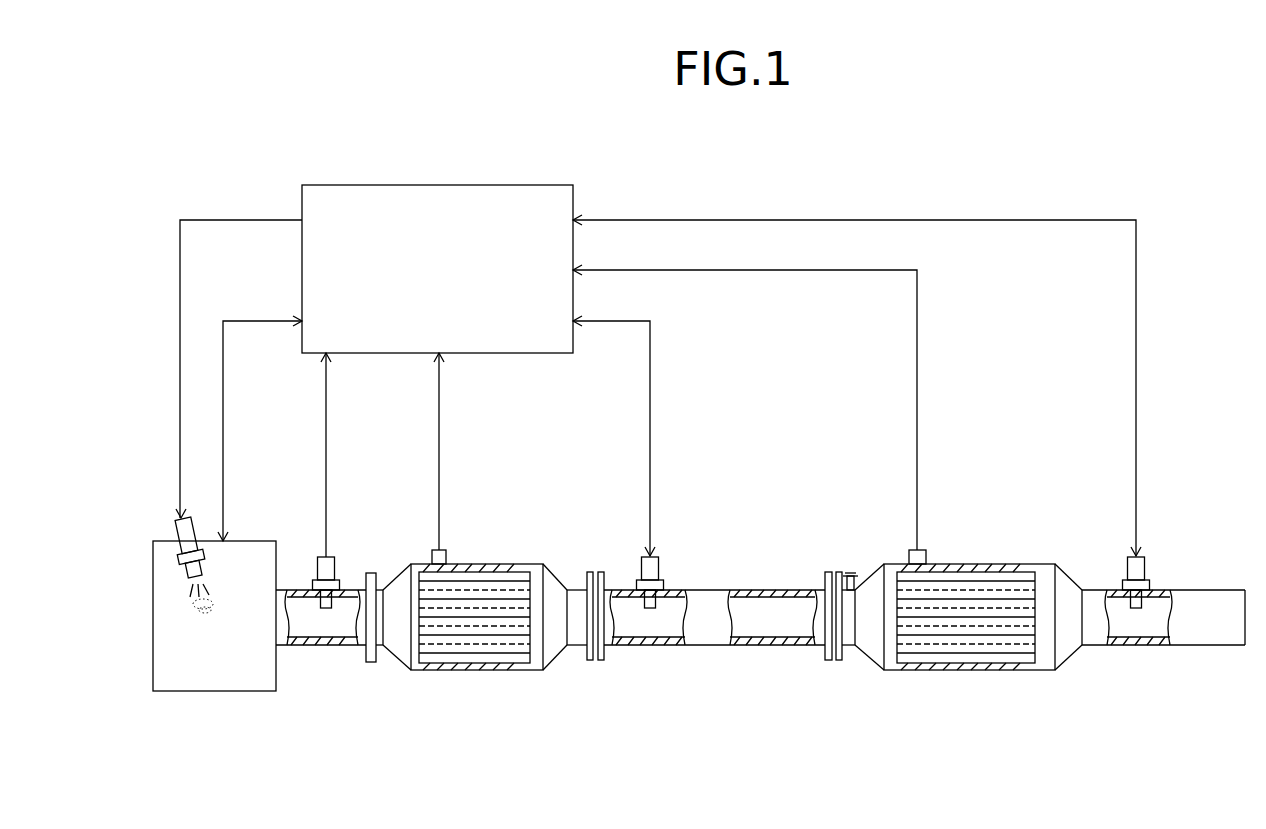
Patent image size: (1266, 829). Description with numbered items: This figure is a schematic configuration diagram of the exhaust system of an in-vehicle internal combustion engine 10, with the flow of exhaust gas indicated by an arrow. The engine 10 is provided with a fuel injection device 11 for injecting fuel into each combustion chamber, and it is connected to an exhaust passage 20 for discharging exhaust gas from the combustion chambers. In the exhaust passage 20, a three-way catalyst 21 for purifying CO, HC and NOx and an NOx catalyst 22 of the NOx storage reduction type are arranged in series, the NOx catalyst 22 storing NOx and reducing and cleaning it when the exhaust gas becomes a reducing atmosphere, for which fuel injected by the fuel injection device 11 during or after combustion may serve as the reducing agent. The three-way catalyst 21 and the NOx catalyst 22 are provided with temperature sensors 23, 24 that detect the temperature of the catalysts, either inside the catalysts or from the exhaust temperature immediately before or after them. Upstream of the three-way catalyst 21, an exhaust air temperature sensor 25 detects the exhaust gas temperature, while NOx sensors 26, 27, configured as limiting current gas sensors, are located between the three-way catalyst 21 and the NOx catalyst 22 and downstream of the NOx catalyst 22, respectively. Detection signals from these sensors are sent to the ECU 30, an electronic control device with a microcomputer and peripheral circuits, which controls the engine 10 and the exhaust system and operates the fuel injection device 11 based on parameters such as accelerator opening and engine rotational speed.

The engine 10 is at (254, 541).
The fuel injection device 11 is at (168, 531).
The exhaust passage 20 is at (329, 650).
The three-way catalyst 21 is at (439, 664).
The NOx catalyst 22 is at (979, 663).
The temperature sensor 23 is at (448, 554).
The temperature sensor 24 is at (930, 558).
The exhaust air temperature sensor 25 is at (338, 566).
The NOx sensor 26 is at (667, 566).
The NOx sensor 27 is at (1148, 566).
The ECU 30 is at (357, 185).